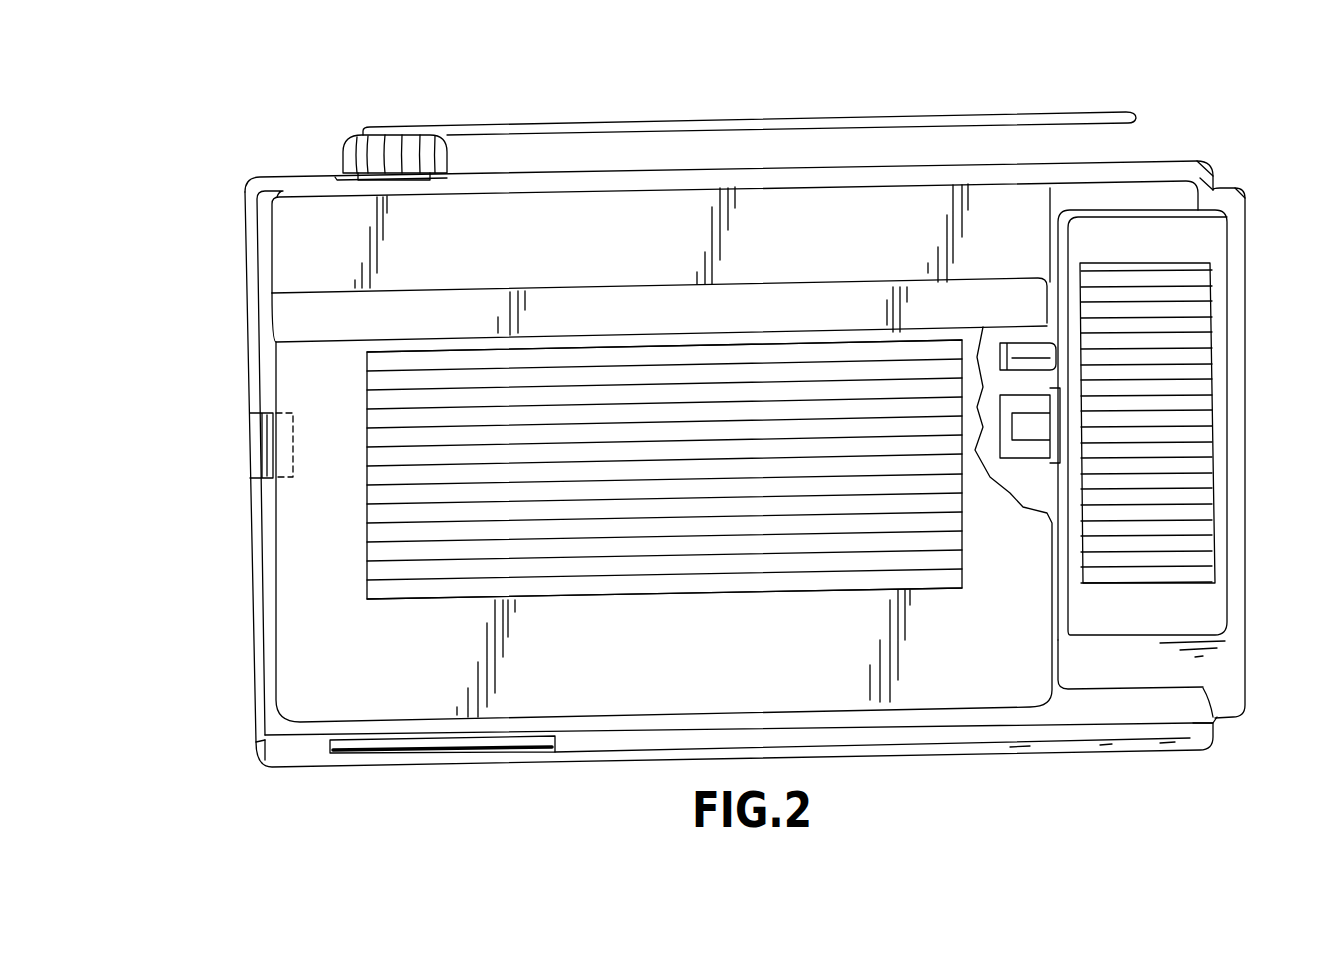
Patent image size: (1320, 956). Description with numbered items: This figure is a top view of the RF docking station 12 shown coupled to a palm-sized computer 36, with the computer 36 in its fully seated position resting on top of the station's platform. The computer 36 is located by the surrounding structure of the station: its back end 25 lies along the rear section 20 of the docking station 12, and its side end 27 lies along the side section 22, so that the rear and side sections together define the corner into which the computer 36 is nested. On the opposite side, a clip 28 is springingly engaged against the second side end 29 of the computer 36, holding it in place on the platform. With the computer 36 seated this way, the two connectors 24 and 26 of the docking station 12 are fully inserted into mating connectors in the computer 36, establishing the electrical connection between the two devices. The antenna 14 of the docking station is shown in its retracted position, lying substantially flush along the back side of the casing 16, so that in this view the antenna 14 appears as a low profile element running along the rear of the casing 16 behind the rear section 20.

The docking station 12 is at (1189, 118).
The antenna 14 is at (747, 117).
The casing 16 is at (1247, 676).
The rear section 20 is at (838, 210).
The side section 22 is at (1213, 607).
The connector 24 is at (1030, 342).
The back end 25 is at (440, 282).
The connector 26 is at (1020, 460).
The side end 27 is at (1055, 672).
The clip 28 is at (253, 446).
The second side end 29 is at (278, 647).
The palm-sized computer 36 is at (297, 568).